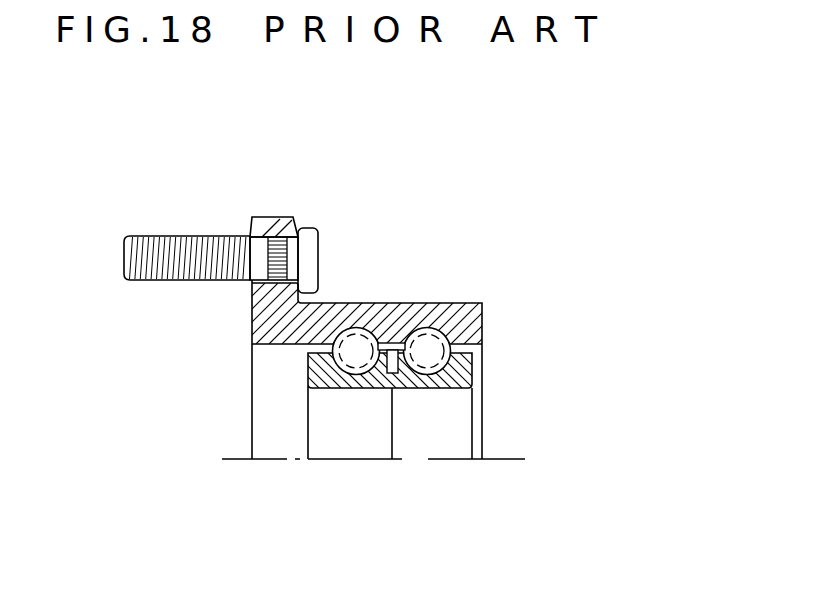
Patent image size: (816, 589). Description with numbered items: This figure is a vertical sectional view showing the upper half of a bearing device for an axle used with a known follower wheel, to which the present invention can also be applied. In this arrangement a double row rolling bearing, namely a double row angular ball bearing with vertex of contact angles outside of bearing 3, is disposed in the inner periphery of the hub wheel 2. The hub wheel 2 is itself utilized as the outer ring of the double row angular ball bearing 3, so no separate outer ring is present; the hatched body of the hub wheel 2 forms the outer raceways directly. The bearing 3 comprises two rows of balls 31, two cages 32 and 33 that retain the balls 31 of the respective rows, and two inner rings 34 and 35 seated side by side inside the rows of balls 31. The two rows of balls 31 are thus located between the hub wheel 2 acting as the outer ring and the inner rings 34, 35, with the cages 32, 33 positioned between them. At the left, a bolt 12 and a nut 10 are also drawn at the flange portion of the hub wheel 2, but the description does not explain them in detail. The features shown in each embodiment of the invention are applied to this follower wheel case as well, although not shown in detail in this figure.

The hub wheel 2 is at (267, 318).
The bolt 12 is at (180, 236).
The nut 10 is at (272, 217).
The double row angular ball bearing with vertex of contact angles outside of bearing 3 is at (389, 388).
The balls 31 is at (419, 329).
The cage 32 is at (381, 378).
The cage 33 is at (402, 386).
The inner ring 34 is at (337, 382).
The inner ring 35 is at (451, 384).